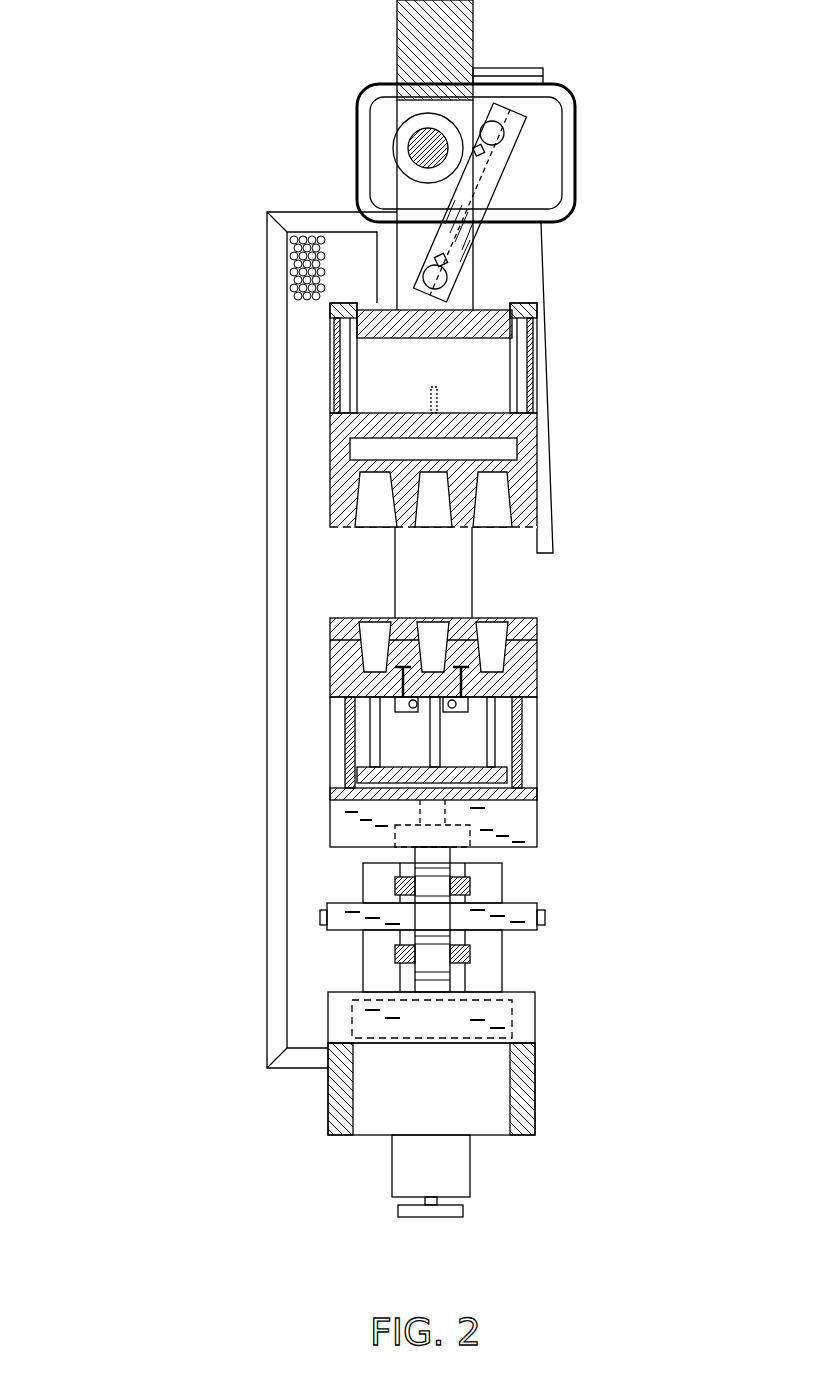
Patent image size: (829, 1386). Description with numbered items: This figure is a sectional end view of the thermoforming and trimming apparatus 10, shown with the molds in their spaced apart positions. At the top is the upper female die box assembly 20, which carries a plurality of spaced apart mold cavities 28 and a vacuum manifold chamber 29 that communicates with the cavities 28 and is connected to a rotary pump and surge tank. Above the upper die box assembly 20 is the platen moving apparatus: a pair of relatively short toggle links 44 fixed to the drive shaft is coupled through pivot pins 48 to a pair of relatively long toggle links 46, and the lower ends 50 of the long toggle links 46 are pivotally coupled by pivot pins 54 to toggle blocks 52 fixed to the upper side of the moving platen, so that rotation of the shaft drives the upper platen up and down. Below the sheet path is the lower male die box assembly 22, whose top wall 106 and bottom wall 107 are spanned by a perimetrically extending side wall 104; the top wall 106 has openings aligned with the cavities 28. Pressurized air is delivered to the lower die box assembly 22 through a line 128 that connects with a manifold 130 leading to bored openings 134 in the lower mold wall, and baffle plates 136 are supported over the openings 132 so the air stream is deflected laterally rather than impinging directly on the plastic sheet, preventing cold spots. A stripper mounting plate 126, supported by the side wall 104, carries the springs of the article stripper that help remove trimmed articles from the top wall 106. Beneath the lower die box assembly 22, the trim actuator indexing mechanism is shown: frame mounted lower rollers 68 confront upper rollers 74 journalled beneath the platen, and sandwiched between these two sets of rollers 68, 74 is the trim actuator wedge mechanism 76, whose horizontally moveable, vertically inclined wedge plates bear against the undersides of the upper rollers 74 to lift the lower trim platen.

The apparatus 10 is at (616, 556).
The upper female die box assembly 20 is at (529, 460).
The lower male die box assembly 22 is at (445, 693).
The mold cavities 28 is at (490, 517).
The vacuum manifold chamber 29 is at (497, 449).
The toggle links 44 is at (496, 100).
The toggle links 46 is at (484, 205).
The pivot pins 48 is at (505, 124).
The lower ends 50 is at (478, 281).
The toggle blocks 52 is at (412, 292).
The pivot pins 54 is at (475, 253).
The lower rollers 68 is at (440, 962).
The rollers 74 is at (440, 891).
The trim actuator wedge mechanism 76 is at (526, 926).
The side wall 104 is at (537, 660).
The top wall 106 is at (537, 618).
The bottom wall 107 is at (455, 708).
The stripper mounting plate 126 is at (405, 657).
The line 128 is at (466, 716).
The manifold 130 is at (405, 715).
The openings 132 is at (537, 697).
The bored openings 134 is at (413, 707).
The baffle plates 136 is at (330, 648).